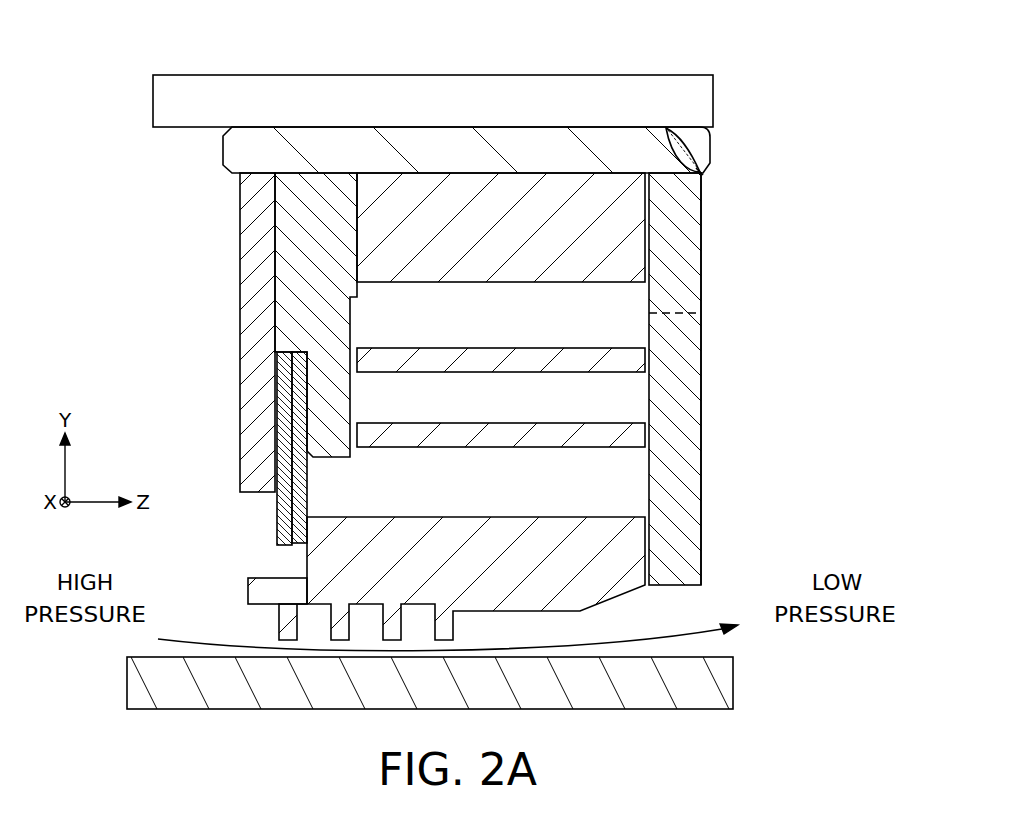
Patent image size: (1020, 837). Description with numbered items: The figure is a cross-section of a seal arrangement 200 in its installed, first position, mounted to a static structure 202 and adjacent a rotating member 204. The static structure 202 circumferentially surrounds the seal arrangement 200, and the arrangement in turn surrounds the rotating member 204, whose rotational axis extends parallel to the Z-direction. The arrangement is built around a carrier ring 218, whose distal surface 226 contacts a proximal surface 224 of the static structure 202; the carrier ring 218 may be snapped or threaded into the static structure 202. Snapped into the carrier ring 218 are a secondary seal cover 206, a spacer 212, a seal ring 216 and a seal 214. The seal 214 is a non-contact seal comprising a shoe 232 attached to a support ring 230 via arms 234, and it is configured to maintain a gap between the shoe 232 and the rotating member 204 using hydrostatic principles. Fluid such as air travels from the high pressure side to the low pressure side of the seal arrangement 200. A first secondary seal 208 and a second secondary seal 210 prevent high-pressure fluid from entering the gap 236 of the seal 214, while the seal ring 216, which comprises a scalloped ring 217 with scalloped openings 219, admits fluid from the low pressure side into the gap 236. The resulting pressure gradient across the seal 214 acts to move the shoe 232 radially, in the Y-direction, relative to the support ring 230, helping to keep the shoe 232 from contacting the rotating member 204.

The seal arrangement 200 is at (803, 97).
The static structure 202 is at (292, 97).
The rotating member 204 is at (735, 683).
The secondary seal cover 206 is at (240, 388).
The first secondary seal 208 is at (290, 543).
The second secondary seal 210 is at (278, 522).
The spacer 212 is at (306, 288).
The seal 214 is at (266, 592).
The seal ring 216 is at (690, 388).
The scalloped ring 217 is at (695, 352).
The carrier ring 218 is at (710, 150).
The scalloped openings 219 is at (690, 312).
The proximal surface 224 is at (700, 172).
The distal surface 226 is at (458, 127).
The support ring 230 is at (473, 238).
The shoe 232 is at (509, 577).
The arms 234 is at (569, 372).
The gap 236 is at (389, 508).